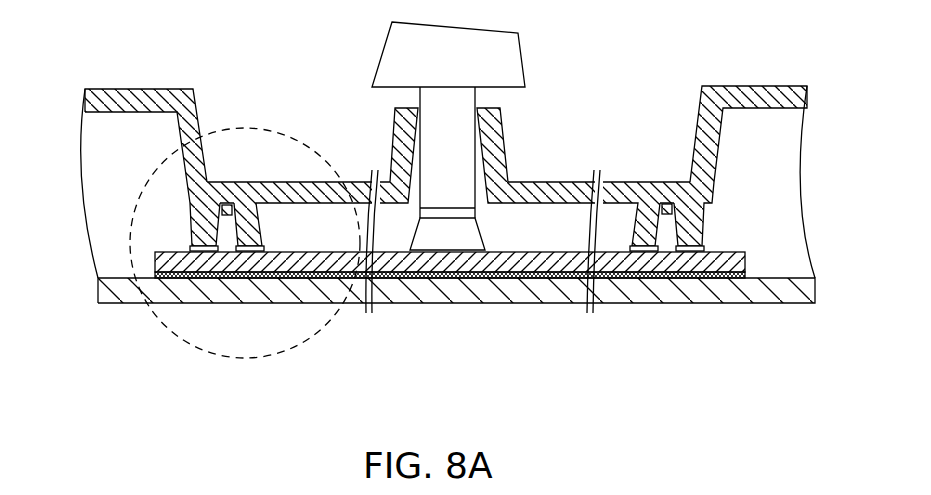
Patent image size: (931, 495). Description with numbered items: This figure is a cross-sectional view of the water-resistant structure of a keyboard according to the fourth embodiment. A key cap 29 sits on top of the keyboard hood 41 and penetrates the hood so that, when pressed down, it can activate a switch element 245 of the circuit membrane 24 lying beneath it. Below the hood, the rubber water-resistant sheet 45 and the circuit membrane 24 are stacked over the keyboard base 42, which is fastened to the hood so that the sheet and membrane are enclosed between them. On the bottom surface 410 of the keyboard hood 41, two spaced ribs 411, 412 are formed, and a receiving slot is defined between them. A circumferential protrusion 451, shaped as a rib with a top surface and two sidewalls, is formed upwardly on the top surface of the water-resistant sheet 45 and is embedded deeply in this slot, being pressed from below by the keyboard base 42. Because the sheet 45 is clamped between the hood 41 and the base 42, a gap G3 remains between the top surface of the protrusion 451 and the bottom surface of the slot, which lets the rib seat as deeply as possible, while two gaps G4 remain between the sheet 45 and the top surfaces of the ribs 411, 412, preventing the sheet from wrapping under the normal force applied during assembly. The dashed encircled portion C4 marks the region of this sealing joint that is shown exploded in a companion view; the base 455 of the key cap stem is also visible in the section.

The keyboard hood 41 is at (84, 98).
The bottom surface of the keyboard hood 410 is at (335, 186).
The circumferential protrusion 451 is at (250, 204).
The key cap 29 is at (460, 23).
The probe base 455 is at (487, 233).
The water-resistant sheet 45 is at (151, 259).
The circuit membrane 24 is at (152, 278).
The switch element 245 is at (447, 280).
The keyboard base 42 is at (96, 293).
The rib 411 is at (160, 303).
The rib 412 is at (300, 303).
The encircled portion C4 is at (247, 361).
The gap G3 is at (232, 203).
The gap G4 is at (193, 250).